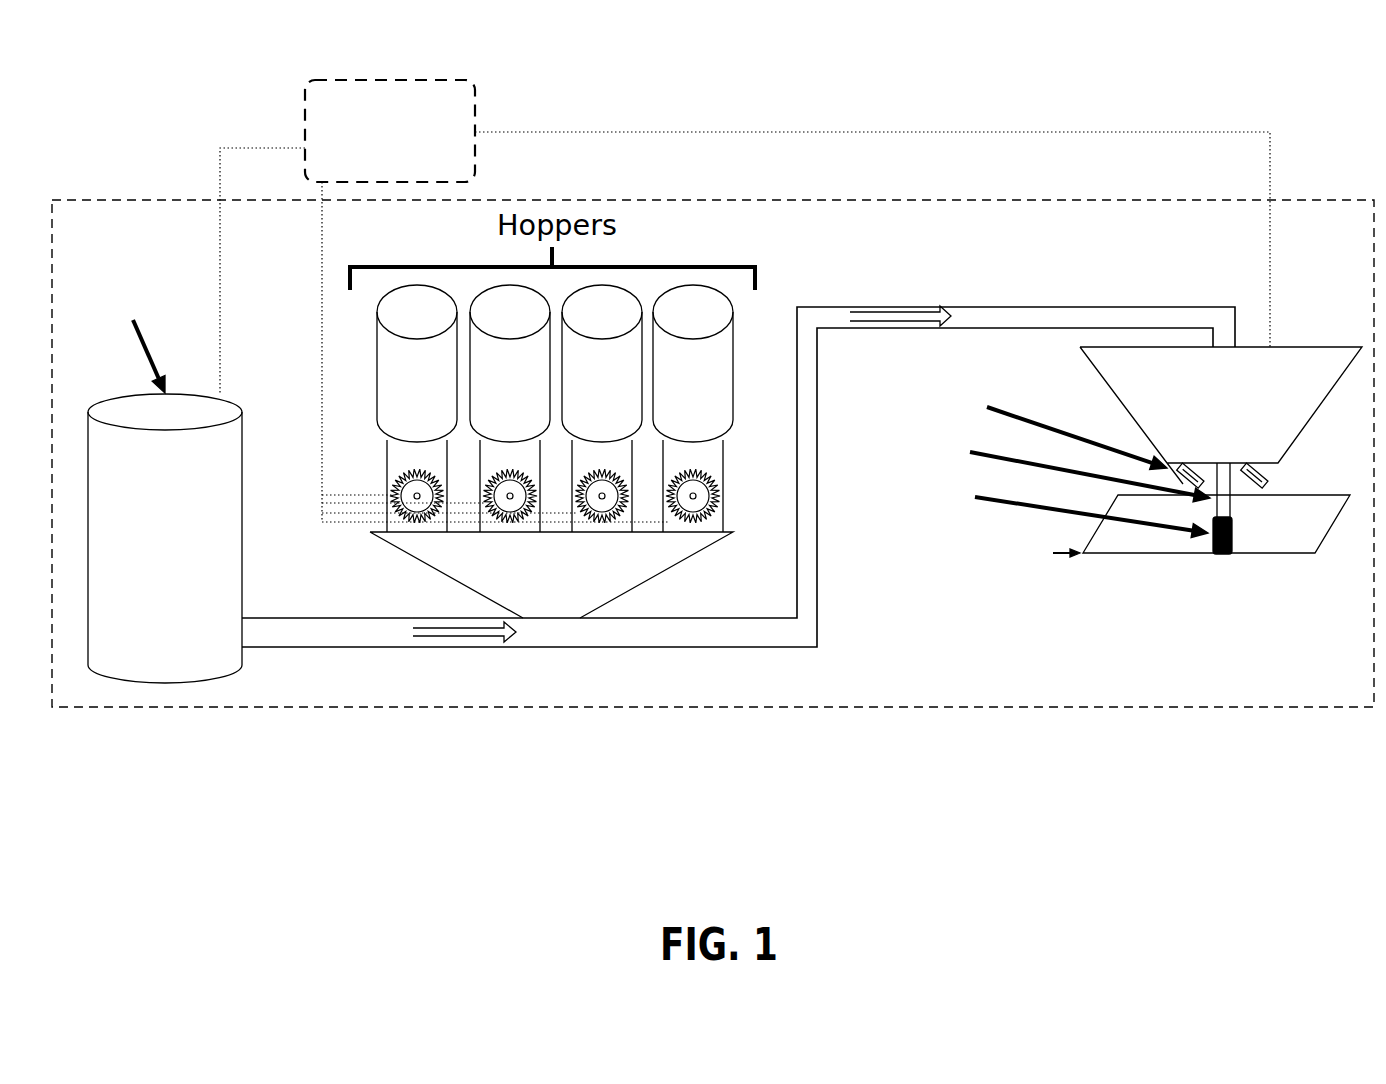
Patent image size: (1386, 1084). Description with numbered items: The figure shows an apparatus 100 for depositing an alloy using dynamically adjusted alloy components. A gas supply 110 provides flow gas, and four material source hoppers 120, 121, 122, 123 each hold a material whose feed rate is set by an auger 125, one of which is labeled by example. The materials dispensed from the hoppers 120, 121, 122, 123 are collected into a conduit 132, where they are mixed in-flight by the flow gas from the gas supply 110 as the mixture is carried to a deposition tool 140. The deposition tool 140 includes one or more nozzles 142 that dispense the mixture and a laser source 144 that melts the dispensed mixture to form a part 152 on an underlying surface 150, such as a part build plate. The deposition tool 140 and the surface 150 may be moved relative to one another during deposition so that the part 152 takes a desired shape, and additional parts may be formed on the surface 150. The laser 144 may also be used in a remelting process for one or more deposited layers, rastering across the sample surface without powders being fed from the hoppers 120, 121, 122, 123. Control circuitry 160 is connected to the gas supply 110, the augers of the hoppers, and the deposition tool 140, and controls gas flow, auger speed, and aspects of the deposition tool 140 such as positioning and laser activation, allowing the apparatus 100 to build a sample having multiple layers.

The apparatus 100 is at (1233, 62).
The gas supply 110 is at (147, 536).
The material source hopper 120 is at (399, 384).
The material source hopper 121 is at (492, 384).
The material source hopper 122 is at (584, 384).
The material source hopper 123 is at (675, 384).
The auger 125 is at (380, 481).
The conduit 132 is at (712, 647).
The deposition tool 140 is at (1298, 347).
The nozzle 142 is at (1260, 489).
The laser source 144 is at (1233, 513).
The underlying surface 150 is at (1280, 553).
The part 152 is at (1235, 541).
The control circuitry 160 is at (468, 80).